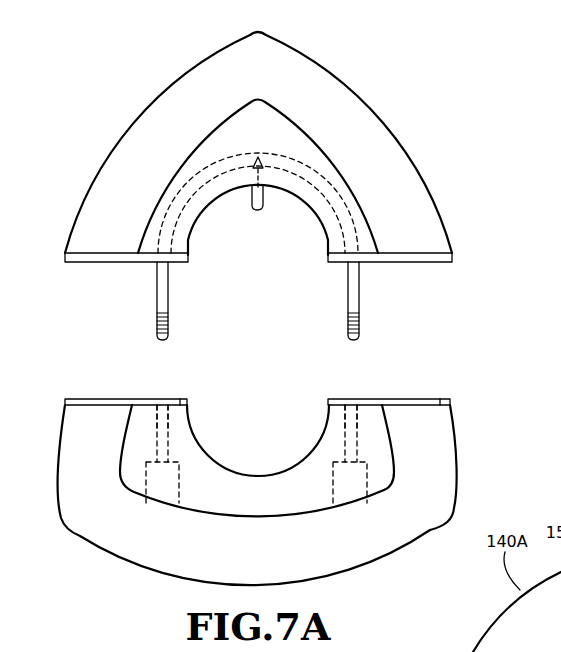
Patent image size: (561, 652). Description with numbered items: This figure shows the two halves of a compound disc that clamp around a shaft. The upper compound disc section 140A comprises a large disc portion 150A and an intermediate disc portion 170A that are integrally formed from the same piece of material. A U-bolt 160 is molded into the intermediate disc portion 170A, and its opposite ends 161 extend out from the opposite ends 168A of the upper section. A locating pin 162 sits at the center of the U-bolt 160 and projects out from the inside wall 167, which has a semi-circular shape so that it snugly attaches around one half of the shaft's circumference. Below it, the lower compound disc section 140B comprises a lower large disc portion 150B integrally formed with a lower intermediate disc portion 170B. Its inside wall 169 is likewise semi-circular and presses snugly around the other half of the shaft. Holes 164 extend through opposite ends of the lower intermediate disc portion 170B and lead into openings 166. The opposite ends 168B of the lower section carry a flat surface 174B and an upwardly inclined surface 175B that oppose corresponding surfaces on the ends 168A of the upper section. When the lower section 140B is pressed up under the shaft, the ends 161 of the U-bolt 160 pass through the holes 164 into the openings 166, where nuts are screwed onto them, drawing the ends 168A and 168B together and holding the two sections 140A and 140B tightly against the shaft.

The upper compound disc section 140A is at (264, 134).
The large disc portion 150A is at (215, 70).
The intermediate disc portion 170A is at (208, 152).
The U-bolt 160 is at (346, 193).
The locating pin 162 is at (258, 212).
The inside wall 167 is at (196, 236).
The opposite ends 168A is at (100, 264).
The ends of U-bolt 161 is at (172, 323).
The lower compound disc section 140B is at (260, 501).
The lower large disc portion 150B is at (133, 540).
The lower intermediate disc portion 170B is at (258, 504).
The inside wall 169 is at (222, 457).
The opposite ends 168B is at (75, 399).
The flat surface 174B is at (126, 399).
The upwardly inclined surface 175B is at (178, 400).
The holes 164 is at (155, 430).
The openings 166 is at (180, 487).